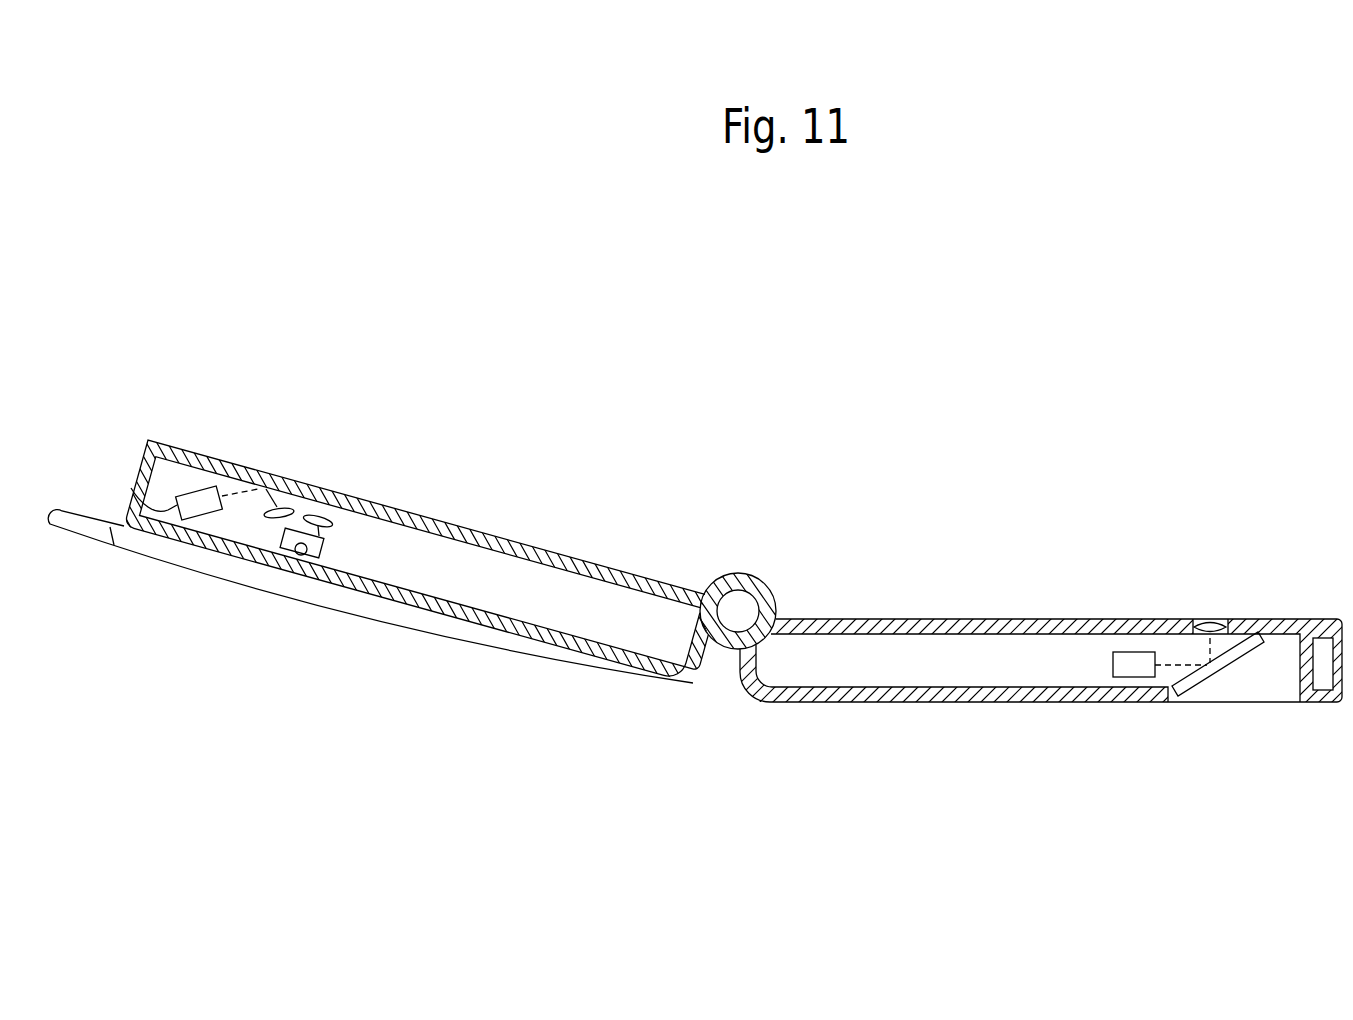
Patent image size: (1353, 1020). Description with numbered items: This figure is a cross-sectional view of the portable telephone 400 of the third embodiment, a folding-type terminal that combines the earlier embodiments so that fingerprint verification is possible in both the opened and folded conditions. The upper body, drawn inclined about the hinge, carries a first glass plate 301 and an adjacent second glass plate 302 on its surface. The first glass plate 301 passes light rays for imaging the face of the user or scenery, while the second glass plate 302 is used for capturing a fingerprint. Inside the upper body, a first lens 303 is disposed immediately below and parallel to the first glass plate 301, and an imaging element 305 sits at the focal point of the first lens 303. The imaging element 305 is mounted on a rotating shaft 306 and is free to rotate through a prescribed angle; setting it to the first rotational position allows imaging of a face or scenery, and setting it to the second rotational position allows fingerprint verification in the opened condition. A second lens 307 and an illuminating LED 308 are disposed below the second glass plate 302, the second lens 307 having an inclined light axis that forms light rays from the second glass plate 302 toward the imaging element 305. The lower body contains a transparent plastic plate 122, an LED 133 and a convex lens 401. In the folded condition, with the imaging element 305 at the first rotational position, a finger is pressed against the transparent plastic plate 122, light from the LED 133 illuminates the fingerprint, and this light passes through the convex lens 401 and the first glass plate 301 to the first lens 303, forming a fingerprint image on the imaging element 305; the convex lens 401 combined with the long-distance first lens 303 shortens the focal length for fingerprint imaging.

The first glass plate 301 is at (328, 489).
The second glass plate 302 is at (270, 482).
The first lens 303 is at (323, 527).
The imaging element 305 is at (322, 557).
The rotating shaft 306 is at (300, 556).
The second lens 307 is at (266, 519).
The LED 308 is at (130, 488).
The portable telephone 400 is at (850, 503).
The convex lens 401 is at (1211, 619).
The LED 133 is at (1112, 663).
The transparent plastic plate 122 is at (1238, 664).